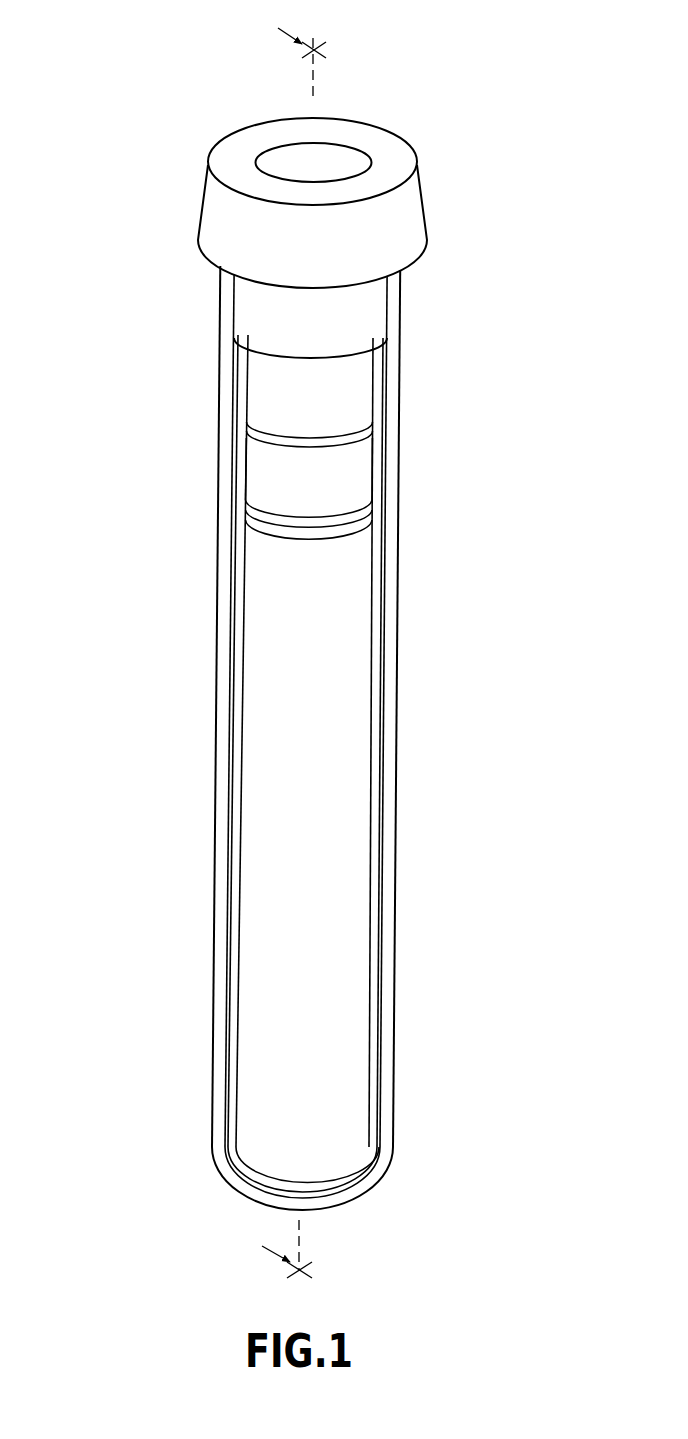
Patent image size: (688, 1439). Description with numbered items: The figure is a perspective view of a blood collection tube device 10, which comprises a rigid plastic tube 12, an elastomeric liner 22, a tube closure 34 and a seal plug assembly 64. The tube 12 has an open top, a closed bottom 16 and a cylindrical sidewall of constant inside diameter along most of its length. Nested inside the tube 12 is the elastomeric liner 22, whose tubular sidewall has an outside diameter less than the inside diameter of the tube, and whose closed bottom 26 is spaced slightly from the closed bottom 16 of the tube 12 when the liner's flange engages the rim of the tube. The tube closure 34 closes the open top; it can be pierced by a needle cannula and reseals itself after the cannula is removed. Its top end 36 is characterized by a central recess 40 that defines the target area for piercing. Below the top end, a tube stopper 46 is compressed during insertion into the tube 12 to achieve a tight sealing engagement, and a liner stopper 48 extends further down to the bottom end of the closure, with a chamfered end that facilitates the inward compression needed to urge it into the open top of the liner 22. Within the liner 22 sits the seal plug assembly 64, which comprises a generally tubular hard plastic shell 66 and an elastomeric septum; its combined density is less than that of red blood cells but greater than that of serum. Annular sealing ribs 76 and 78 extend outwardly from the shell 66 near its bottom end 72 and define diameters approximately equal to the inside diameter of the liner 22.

The device 10 is at (286, 643).
The tube 12 is at (281, 738).
The closed bottom 16 is at (366, 1186).
The elastomeric liner 22 is at (265, 743).
The closed bottom 26 is at (246, 1177).
The tube closure 34 is at (348, 192).
The top end 36 is at (390, 146).
The central recess 40 is at (284, 160).
The tube stopper 46 is at (388, 306).
The liner stopper 48 is at (378, 378).
The seal plug assembly 64 is at (305, 493).
The shell 66 is at (373, 485).
The bottom end 72 is at (251, 526).
The annular sealing rib 76 is at (373, 511).
The annular sealing rib 78 is at (248, 428).